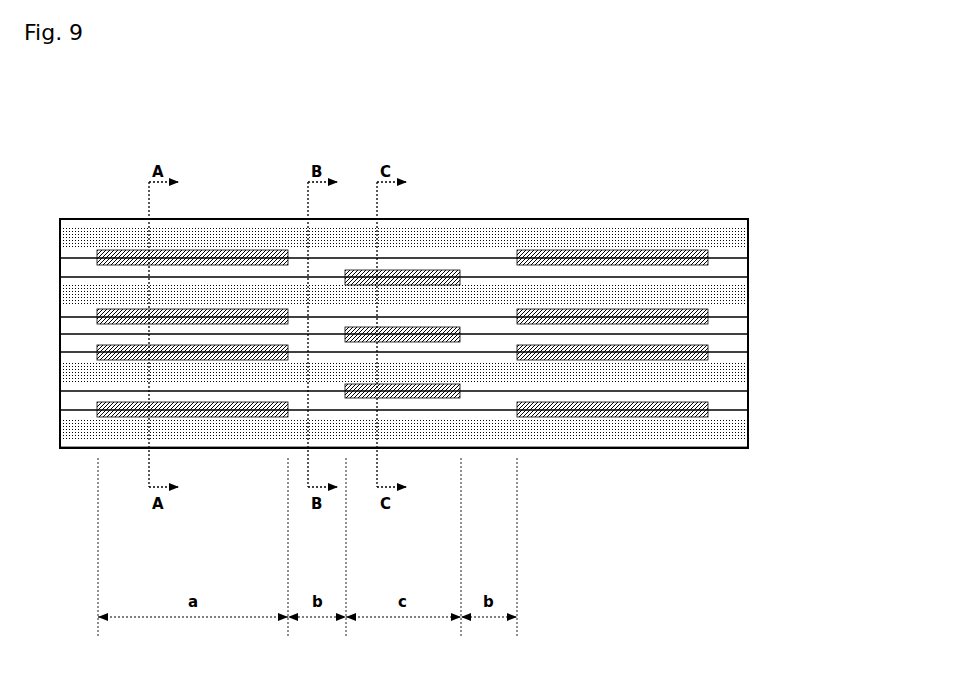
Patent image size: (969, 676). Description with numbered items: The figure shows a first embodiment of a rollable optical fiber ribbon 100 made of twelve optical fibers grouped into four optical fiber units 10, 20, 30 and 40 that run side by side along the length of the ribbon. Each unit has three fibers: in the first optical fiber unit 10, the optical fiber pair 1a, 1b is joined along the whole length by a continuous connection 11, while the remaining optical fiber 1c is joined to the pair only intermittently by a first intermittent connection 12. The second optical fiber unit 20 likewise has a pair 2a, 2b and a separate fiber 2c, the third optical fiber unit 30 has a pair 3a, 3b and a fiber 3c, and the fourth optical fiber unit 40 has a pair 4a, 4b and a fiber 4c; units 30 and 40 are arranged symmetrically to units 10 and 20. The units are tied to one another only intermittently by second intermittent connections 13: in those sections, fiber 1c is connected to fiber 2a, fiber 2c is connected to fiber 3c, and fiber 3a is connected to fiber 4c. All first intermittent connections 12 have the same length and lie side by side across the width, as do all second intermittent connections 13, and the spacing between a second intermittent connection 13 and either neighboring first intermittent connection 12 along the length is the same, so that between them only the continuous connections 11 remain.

The optical fiber ribbon 100 is at (418, 141).
The first optical fiber unit 10 is at (464, 424).
The second optical fiber unit 20 is at (464, 366).
The third optical fiber unit 30 is at (464, 308).
The fourth optical fiber unit 40 is at (464, 251).
The optical fiber of optical fiber pair 1a is at (749, 447).
The optical fiber of optical fiber pair 1b is at (749, 424).
The optical fiber not belonging to the optical fiber pair 1c is at (749, 409).
The optical fiber of optical fiber pair 2a is at (749, 390).
The optical fiber of optical fiber pair 2b is at (749, 366).
The optical fiber not belonging to the optical fiber pair 2c is at (749, 350).
The optical fiber of optical fiber pair 3a is at (749, 288).
The optical fiber of optical fiber pair 3b is at (749, 316).
The optical fiber not belonging to the optical fiber pair 3c is at (749, 329).
The optical fiber of optical fiber pair 4a is at (749, 228).
The optical fiber of optical fiber pair 4b is at (749, 258).
The optical fiber not belonging to the optical fiber pair 4c is at (749, 272).
The continuous connection 11 is at (510, 226).
The first intermittent connection 12 is at (633, 229).
The second intermittent connection 13 is at (428, 264).